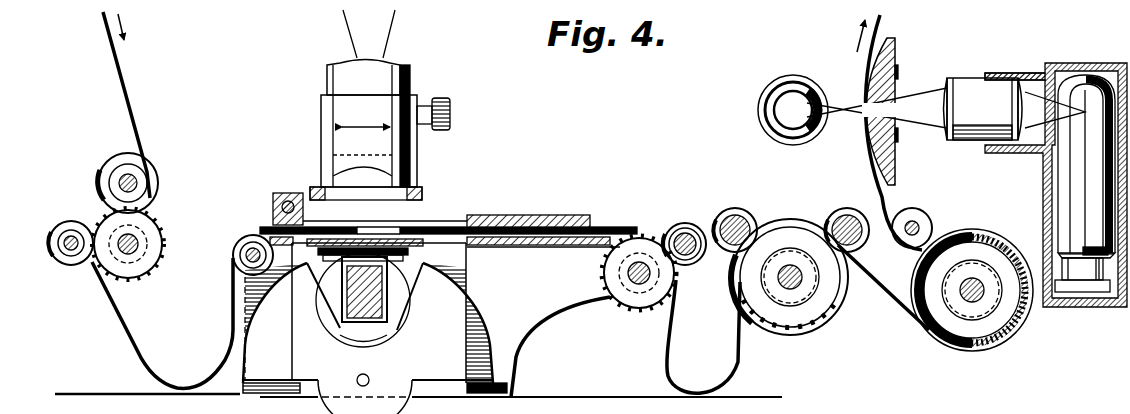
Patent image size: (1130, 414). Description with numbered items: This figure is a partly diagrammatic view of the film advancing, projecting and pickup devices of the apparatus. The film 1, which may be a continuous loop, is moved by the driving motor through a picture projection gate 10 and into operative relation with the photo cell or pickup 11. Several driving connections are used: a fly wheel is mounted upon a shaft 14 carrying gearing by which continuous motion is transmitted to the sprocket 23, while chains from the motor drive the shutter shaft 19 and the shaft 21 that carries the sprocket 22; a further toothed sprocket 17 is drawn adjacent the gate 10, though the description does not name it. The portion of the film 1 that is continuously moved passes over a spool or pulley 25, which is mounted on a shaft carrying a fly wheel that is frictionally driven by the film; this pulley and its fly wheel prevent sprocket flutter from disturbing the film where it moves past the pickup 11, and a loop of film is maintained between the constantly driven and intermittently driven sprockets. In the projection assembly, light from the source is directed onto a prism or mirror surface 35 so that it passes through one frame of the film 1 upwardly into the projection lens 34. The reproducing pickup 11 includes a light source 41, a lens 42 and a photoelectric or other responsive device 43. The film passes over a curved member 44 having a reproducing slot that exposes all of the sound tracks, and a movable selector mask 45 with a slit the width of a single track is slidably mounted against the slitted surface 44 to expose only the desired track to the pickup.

The film 1 is at (120, 87).
The picture projection gate 10 is at (453, 221).
The photo cell or pickup 11 is at (1008, 73).
The shaft 14 is at (790, 290).
The feed sprocket 17 is at (627, 295).
The shutter shaft 19 is at (369, 377).
The shaft 21 is at (140, 245).
The sprocket 22 is at (145, 237).
The sprocket 23 is at (801, 291).
The spool or pulley 25 is at (988, 323).
The projection lens 34 is at (332, 113).
The prism or mirror surface 35 is at (382, 303).
The light source 41 is at (1070, 178).
The lens 42 is at (967, 87).
The photoelectric or other responsive device 43 is at (800, 100).
The curved member 44 is at (897, 111).
The movable selector mask 45 is at (897, 102).